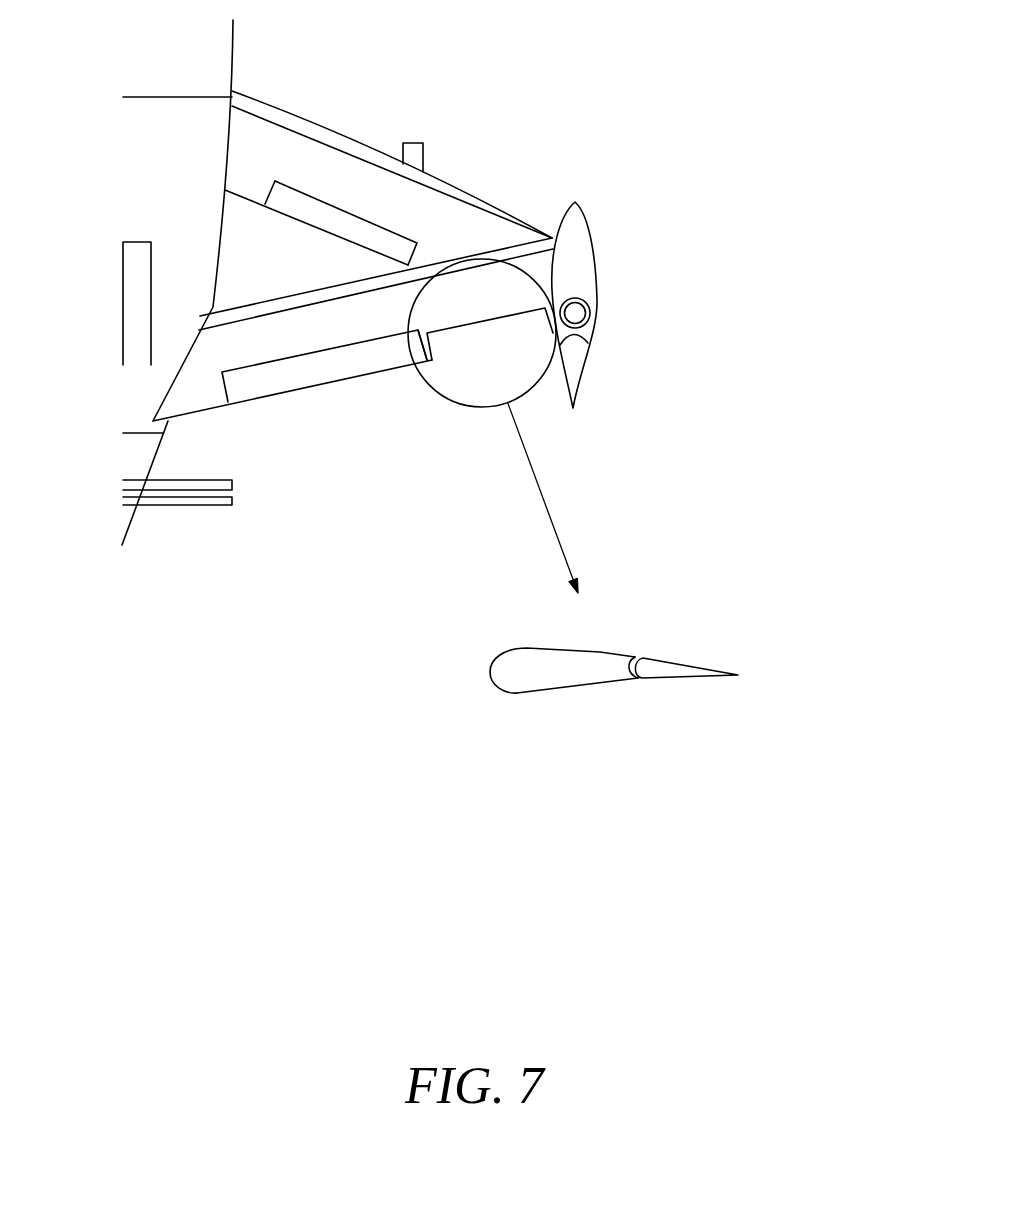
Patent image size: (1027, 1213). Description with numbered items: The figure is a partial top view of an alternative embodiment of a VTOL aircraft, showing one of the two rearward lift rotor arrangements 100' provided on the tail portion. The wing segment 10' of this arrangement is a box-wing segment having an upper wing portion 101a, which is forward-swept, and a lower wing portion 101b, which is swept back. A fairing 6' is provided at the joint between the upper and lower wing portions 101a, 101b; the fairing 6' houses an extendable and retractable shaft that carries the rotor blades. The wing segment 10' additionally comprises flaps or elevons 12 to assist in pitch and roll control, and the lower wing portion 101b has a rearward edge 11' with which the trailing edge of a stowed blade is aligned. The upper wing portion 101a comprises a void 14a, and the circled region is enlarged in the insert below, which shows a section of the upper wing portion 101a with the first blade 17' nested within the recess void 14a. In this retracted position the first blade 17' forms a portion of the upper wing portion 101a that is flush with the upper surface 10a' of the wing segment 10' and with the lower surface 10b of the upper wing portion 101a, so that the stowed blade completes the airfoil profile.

The rearward lift rotor arrangement 100' is at (445, 282).
The lower wing portion 101b is at (263, 130).
The upper wing portion 101a is at (332, 328).
The wing segment 10' is at (365, 426).
The flap/elevon 12 is at (263, 385).
The rearward edge 11' is at (440, 411).
The void 14a is at (495, 330).
The fairing 6' is at (640, 305).
The upper surface 10a' is at (569, 614).
The lower surface 10b is at (567, 690).
The first rotor blade 17' is at (686, 641).